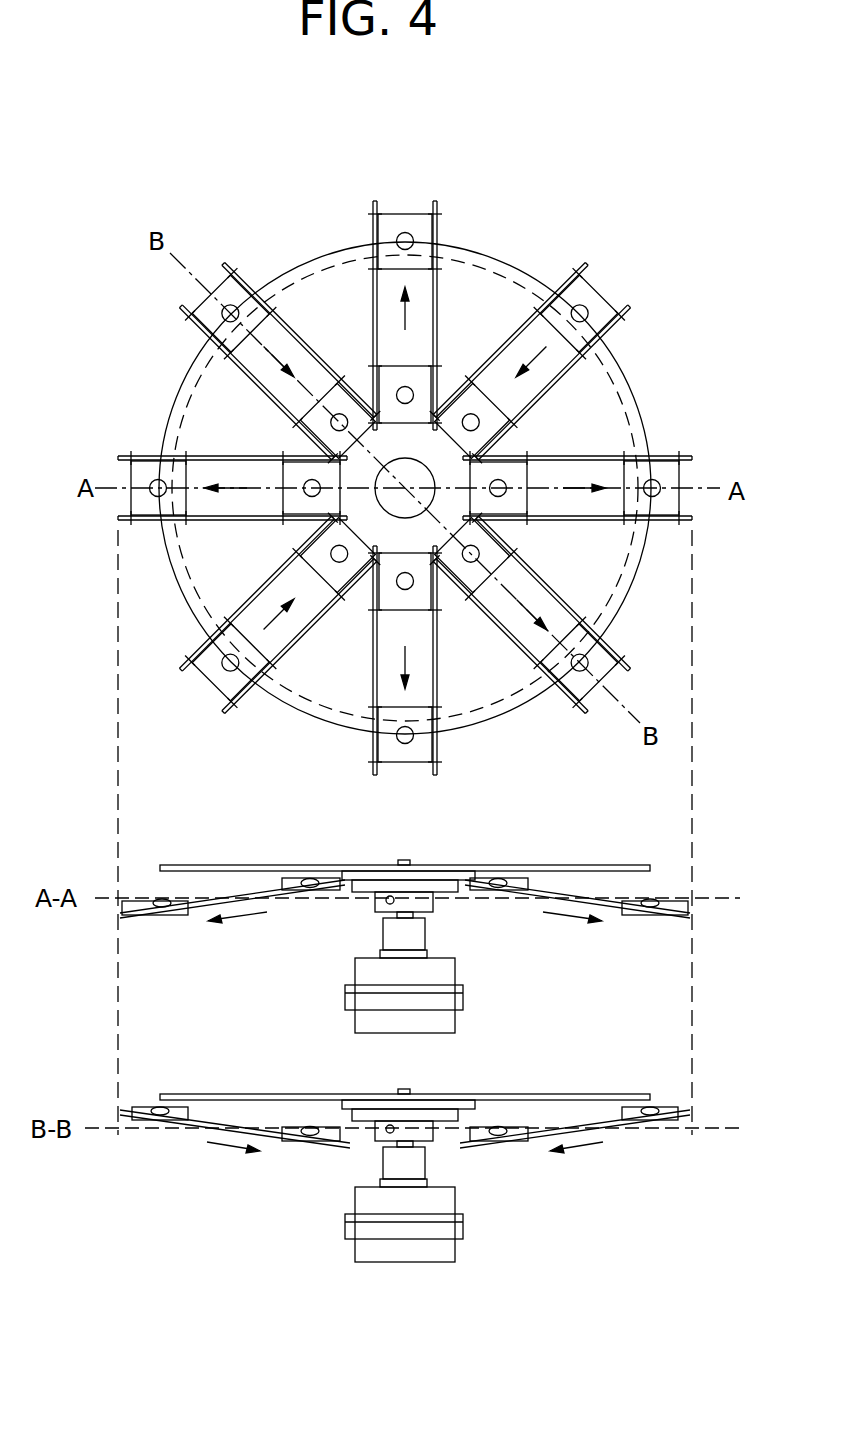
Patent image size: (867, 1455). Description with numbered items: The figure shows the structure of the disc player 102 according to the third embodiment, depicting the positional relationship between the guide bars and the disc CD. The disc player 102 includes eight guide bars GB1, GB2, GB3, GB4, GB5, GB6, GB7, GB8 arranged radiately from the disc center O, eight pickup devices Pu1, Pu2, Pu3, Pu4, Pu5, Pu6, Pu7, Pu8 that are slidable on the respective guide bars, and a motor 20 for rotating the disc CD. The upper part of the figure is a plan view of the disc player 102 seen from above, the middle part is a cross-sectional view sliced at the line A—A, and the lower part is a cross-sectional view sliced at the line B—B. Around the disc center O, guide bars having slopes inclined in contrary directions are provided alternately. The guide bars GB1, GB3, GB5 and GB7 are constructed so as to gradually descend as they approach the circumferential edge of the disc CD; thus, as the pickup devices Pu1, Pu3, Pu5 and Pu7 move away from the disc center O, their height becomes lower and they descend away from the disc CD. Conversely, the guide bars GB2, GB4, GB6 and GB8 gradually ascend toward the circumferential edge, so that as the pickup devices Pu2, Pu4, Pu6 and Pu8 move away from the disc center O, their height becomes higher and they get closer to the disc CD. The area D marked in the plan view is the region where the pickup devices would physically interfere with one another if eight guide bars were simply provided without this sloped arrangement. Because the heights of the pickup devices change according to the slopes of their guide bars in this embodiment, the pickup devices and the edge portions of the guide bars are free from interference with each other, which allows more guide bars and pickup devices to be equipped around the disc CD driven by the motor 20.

The disc player 102 is at (616, 250).
The disc CD is at (525, 258).
The disc center O is at (418, 470).
The interference area D is at (546, 434).
The motor 20 is at (455, 973).
The pickup device Pu1 is at (620, 508).
The pickup device Pu2 is at (603, 668).
The pickup device Pu3 is at (405, 768).
The pickup device Pu4 is at (211, 681).
The pickup device Pu5 is at (176, 455).
The pickup device Pu6 is at (236, 286).
The pickup device Pu7 is at (404, 203).
The pickup device Pu8 is at (603, 291).
The guide bar GB1 is at (658, 525).
The guide bar GB2 is at (583, 715).
The guide bar GB3 is at (372, 777).
The guide bar GB4 is at (236, 709).
The guide bar GB5 is at (137, 528).
The guide bar GB6 is at (190, 307).
The guide bar GB7 is at (440, 236).
The guide bar GB8 is at (625, 330).